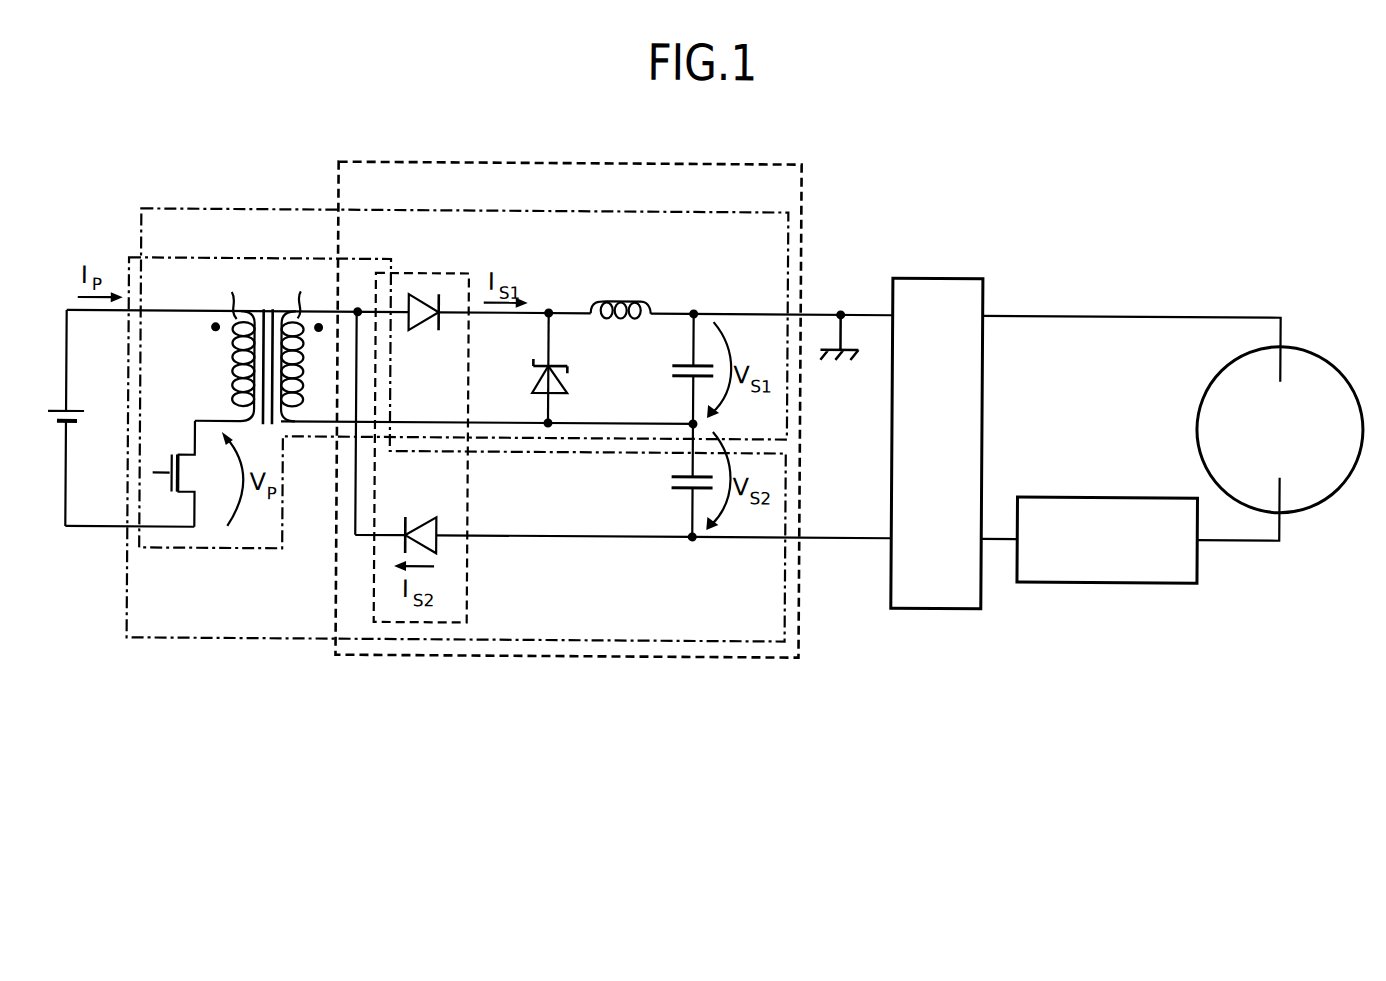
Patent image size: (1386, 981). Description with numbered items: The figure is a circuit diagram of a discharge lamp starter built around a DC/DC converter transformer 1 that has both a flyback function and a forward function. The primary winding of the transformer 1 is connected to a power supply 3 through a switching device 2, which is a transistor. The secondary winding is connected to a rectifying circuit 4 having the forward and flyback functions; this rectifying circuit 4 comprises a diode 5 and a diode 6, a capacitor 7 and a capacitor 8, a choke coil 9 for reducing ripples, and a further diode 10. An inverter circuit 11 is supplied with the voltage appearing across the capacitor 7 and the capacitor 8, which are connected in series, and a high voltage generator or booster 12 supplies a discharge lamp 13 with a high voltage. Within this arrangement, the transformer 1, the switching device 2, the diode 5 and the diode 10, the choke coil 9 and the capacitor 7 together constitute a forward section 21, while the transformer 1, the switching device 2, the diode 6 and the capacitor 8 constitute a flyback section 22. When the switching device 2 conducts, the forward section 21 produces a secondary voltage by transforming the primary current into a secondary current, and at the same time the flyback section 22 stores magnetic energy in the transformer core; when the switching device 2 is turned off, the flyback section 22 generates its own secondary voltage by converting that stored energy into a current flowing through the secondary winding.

The DC/DC converter transformer 1 is at (268, 310).
The switching device 2 is at (168, 501).
The power supply 3 is at (53, 412).
The rectifying circuit 4 is at (668, 163).
The diode 5 is at (428, 334).
The diode 6 is at (424, 521).
The capacitor 7 is at (670, 371).
The capacitor 8 is at (670, 483).
The choke coil 9 is at (620, 302).
The diode 10 is at (566, 381).
The inverter circuit 11 is at (937, 277).
The high voltage generator (booster) 12 is at (1108, 495).
The discharge lamp 13 is at (1321, 355).
The forward section 21 is at (793, 261).
The flyback section 22 is at (793, 594).